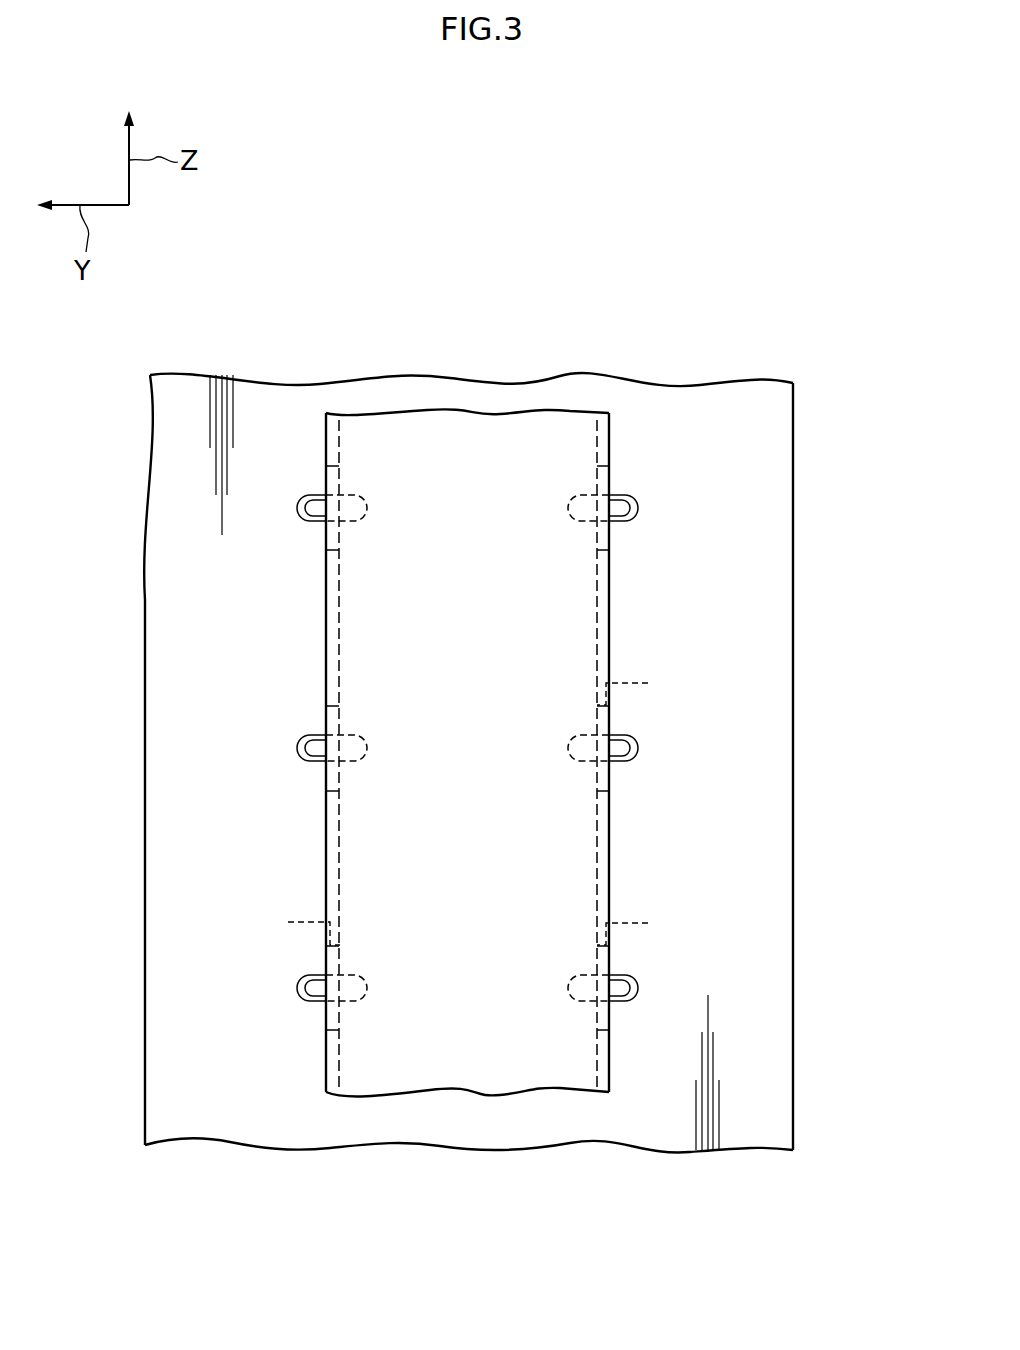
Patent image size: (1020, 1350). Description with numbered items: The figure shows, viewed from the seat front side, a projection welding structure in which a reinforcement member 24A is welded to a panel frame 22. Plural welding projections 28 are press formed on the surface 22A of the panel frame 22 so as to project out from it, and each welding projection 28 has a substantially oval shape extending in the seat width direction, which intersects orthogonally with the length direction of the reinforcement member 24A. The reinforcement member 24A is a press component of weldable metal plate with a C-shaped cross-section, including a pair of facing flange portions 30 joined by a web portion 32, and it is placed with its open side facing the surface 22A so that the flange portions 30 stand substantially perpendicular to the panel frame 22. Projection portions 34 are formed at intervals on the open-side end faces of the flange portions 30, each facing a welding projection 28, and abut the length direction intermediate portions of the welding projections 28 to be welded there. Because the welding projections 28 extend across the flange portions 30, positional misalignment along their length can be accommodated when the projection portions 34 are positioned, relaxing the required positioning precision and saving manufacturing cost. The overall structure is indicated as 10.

The panel 10 is at (481, 714).
The panel frame 22 is at (516, 763).
The surface of the panel frame 22A is at (782, 933).
The reinforcement member 24A is at (622, 605).
The welding projections 28 is at (612, 736).
The flange portions 30 is at (326, 817).
The web portion 32 is at (526, 426).
The projection portions 34 is at (648, 683).